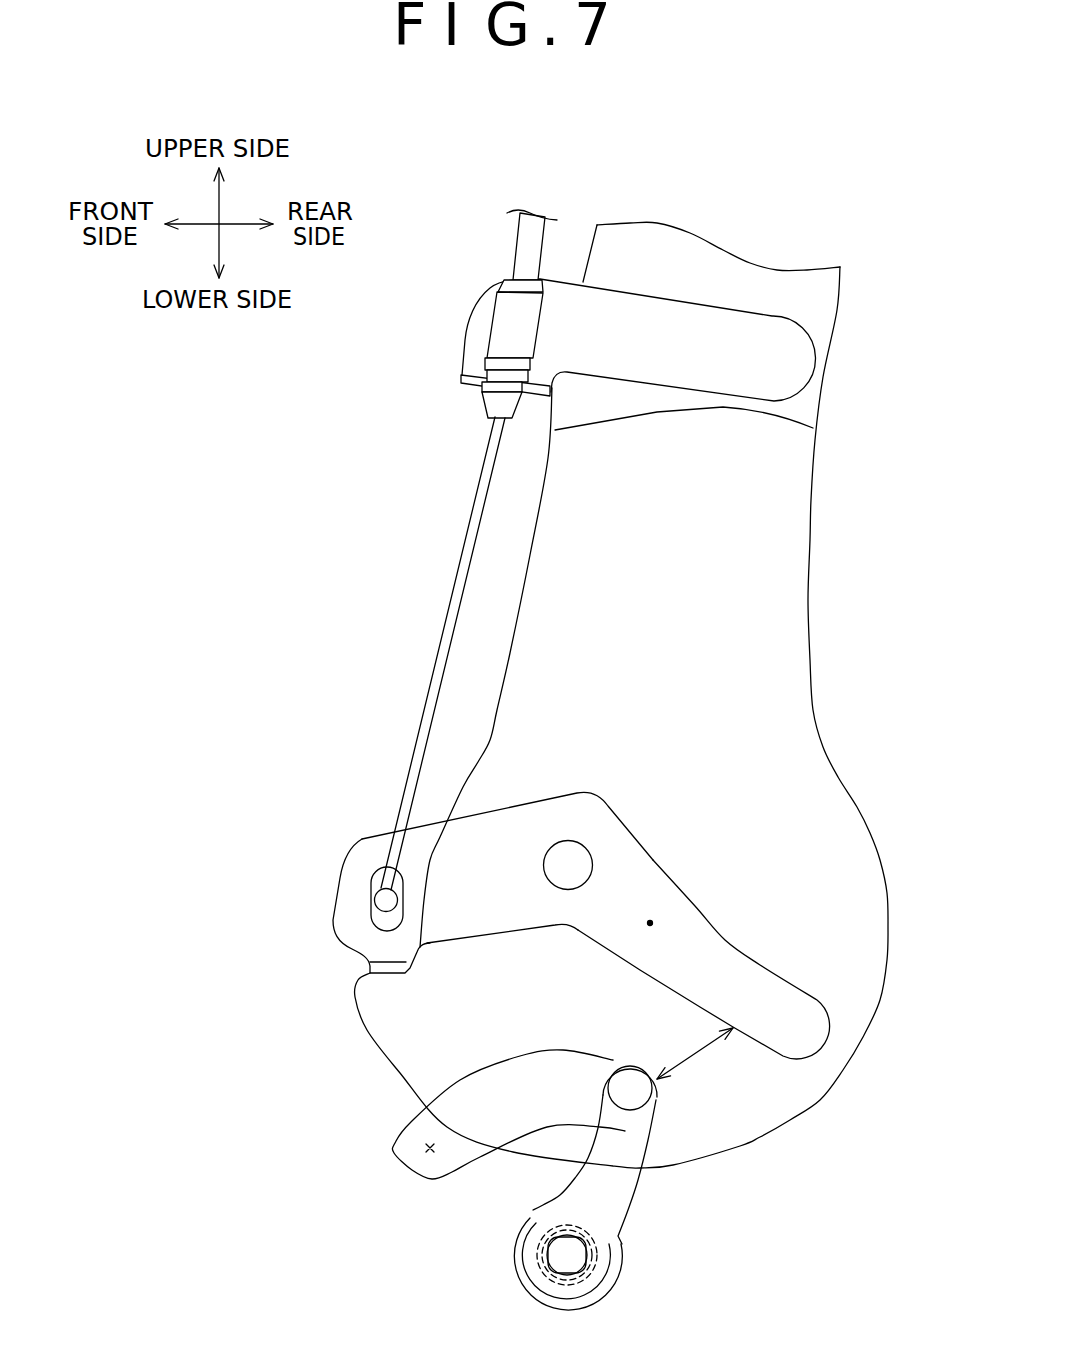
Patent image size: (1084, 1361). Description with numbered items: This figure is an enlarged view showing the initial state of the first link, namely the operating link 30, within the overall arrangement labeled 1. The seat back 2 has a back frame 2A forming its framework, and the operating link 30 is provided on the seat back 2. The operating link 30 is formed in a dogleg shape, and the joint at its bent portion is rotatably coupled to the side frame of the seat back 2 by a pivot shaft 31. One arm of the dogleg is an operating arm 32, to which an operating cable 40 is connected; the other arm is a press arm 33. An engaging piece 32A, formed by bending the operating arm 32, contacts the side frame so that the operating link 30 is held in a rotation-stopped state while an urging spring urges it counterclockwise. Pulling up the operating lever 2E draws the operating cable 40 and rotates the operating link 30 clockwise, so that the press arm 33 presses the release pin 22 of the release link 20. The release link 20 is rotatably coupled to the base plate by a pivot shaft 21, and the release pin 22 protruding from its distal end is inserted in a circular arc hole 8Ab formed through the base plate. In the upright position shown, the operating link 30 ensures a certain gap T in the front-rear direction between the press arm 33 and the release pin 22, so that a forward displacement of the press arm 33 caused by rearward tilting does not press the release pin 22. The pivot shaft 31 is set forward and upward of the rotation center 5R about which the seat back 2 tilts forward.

The pedal device 1 is at (338, 457).
The seat back 2 is at (639, 695).
The back frame 2A is at (780, 527).
The operating lever 2E is at (533, 212).
The operating cable 40 is at (452, 610).
The operating link 30 is at (536, 891).
The pivot shaft 31 is at (568, 865).
The operating arm 32 is at (488, 830).
The engaging piece 32A is at (380, 967).
The press arm 33 is at (762, 982).
The rotation center 5R is at (650, 923).
The release link 20 is at (618, 1156).
The pivot shaft 21 is at (570, 1260).
The release pin 22 is at (628, 1082).
The gap T is at (698, 1059).
The circular arc hole 8Ab is at (430, 1148).